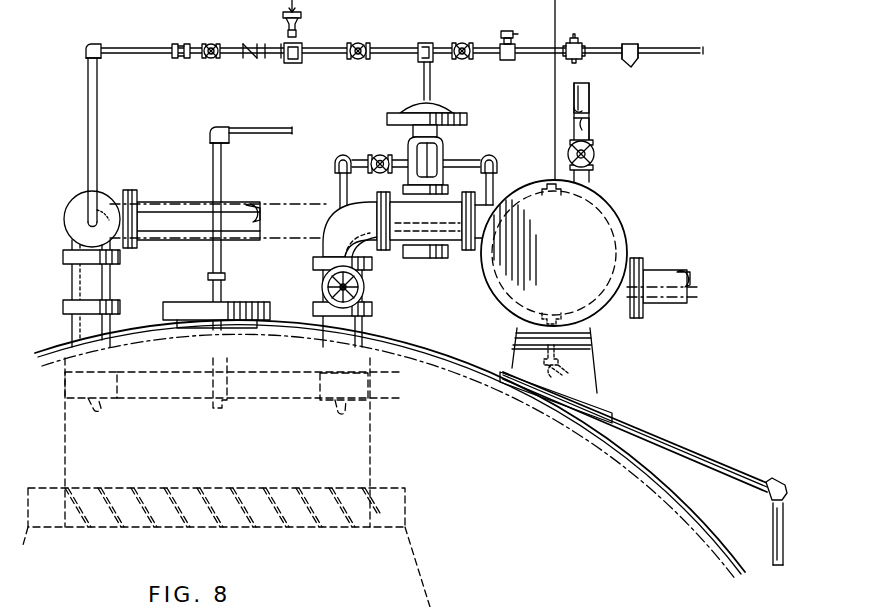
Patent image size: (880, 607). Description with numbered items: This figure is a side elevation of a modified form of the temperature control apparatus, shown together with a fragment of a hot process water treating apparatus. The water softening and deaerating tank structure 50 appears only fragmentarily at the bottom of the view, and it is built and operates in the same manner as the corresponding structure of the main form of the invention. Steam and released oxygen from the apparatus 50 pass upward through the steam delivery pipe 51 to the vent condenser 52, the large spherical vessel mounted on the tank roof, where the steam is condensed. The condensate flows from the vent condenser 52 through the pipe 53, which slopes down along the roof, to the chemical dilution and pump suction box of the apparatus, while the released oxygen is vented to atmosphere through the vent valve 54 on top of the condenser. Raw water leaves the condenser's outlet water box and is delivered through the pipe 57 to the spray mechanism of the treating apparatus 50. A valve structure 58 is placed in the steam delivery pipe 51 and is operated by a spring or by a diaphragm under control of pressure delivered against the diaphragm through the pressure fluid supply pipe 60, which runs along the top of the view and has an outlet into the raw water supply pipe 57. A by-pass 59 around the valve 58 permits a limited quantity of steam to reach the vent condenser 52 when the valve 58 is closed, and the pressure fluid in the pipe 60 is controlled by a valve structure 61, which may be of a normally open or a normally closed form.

The water softening and deaerating tank structure 50 is at (612, 452).
The steam delivery pipe 51 is at (364, 247).
The vent condenser 52 is at (593, 225).
The condensate pipe 53 is at (711, 448).
The vent valve 54 is at (595, 151).
The raw water supply pipe 57 is at (80, 225).
The valve structure 58 is at (446, 227).
The by-pass 59 is at (362, 159).
The pressure fluid supply pipe 60 is at (88, 82).
The valve structure 61 is at (284, 25).